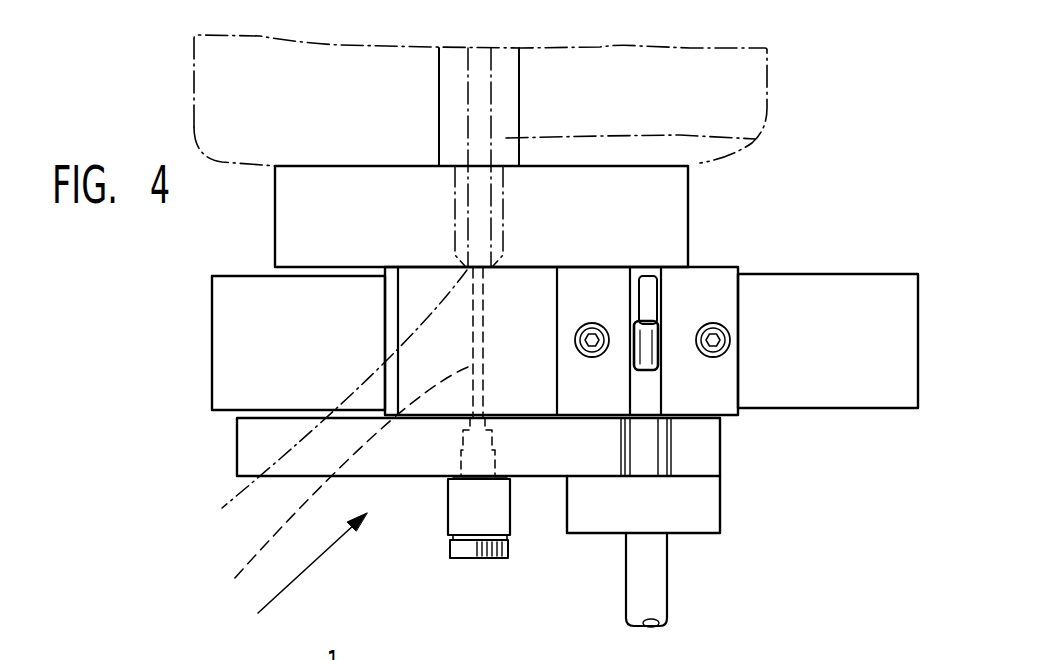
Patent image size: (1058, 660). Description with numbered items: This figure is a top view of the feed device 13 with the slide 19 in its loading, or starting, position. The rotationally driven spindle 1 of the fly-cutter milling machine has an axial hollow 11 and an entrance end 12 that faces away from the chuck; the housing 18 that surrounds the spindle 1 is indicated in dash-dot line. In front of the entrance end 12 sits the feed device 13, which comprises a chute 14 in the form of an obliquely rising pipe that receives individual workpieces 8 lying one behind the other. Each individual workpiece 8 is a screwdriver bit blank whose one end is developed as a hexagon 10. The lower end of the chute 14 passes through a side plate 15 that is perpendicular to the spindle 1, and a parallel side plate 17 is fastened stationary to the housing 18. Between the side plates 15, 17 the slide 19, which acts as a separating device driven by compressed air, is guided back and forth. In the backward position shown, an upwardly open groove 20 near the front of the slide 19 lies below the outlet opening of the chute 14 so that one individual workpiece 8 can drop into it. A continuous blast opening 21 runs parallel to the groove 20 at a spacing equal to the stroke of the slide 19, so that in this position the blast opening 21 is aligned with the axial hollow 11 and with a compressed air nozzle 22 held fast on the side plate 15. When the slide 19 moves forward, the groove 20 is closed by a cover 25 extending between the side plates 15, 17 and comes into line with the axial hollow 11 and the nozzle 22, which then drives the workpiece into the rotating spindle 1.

The spindle 1 is at (755, 139).
The individual workpiece 8 is at (660, 326).
The hexagon 10 is at (648, 359).
The axial hollow 11 is at (467, 100).
The entrance end 12 is at (326, 403).
The feed device 13 is at (305, 584).
The chute 14 is at (653, 573).
The side plate 15 is at (430, 462).
The side plate 17 is at (300, 233).
The workpiece 18 is at (213, 119).
The slide 19 is at (692, 283).
The groove 20 is at (637, 385).
The blast opening 21 is at (332, 487).
The compressed air nozzle 22 is at (478, 468).
The cover 25 is at (425, 293).